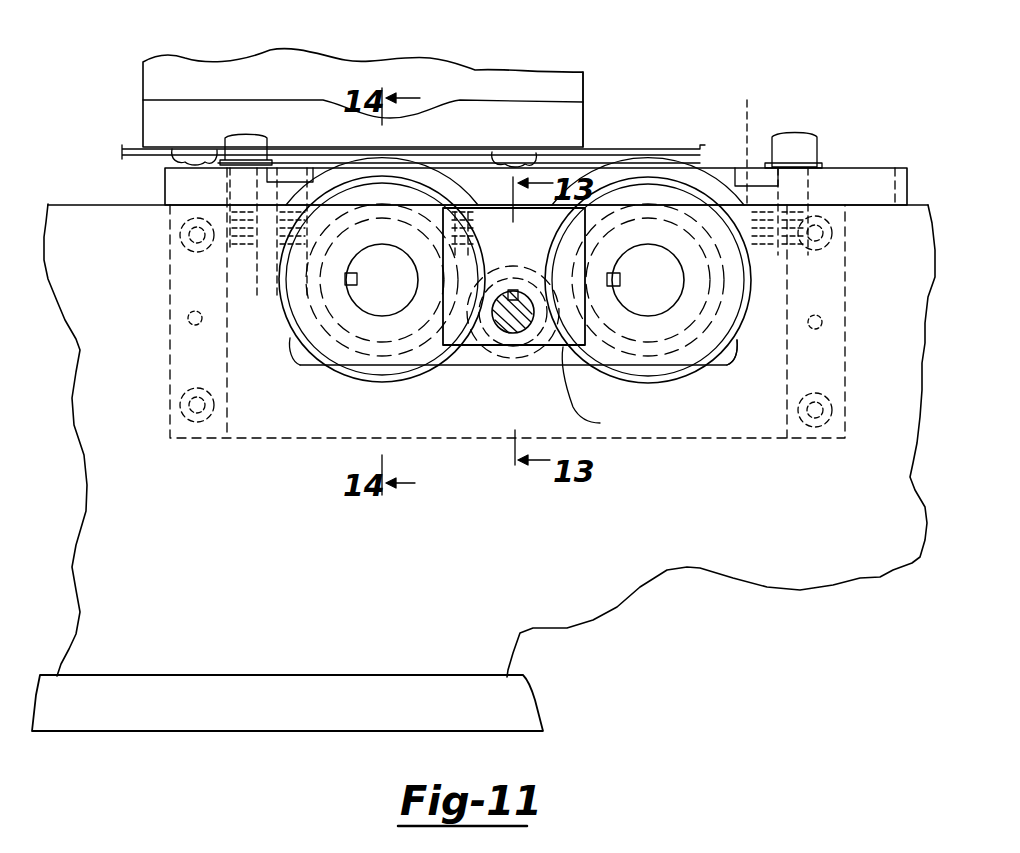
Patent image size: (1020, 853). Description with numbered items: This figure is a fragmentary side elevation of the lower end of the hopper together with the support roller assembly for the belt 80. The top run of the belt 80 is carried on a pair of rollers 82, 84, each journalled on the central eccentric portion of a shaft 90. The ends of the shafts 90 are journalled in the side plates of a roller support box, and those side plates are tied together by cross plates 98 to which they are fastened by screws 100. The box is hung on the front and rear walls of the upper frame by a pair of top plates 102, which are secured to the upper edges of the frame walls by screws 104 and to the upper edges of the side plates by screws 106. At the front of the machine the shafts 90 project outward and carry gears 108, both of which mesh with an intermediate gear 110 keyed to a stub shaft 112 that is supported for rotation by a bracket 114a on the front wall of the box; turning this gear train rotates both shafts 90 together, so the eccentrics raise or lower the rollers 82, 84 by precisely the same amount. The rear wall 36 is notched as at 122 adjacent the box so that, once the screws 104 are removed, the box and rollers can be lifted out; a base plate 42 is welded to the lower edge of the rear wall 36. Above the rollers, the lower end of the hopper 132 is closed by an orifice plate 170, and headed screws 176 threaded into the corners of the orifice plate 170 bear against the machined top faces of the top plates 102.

The rear wall 36 is at (777, 580).
The base plate 42 is at (265, 731).
The belt 80 is at (580, 172).
The roller 82 is at (393, 157).
The roller 84 is at (653, 163).
The shaft 90 is at (377, 307).
The cross plate 98 is at (180, 362).
The screw 100 is at (173, 237).
The top plate 102 is at (855, 170).
The screw 104 is at (290, 85).
The screw 106 is at (280, 170).
The gear 108 is at (388, 378).
The intermediate gear 110 is at (515, 373).
The stub shaft 112 is at (513, 325).
The bracket 114a is at (610, 392).
The notch 122 is at (737, 340).
The carriage 132 is at (572, 65).
The orifice plate 170 is at (585, 105).
The headed screw 176 is at (167, 160).